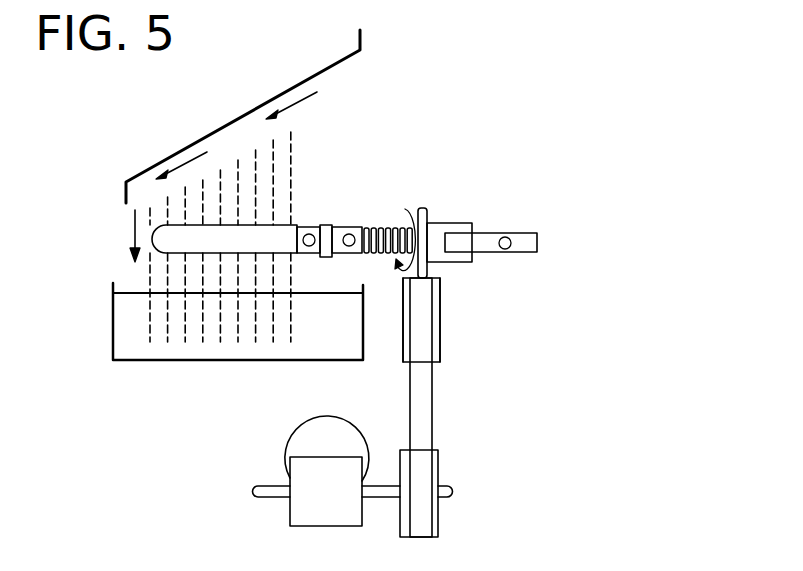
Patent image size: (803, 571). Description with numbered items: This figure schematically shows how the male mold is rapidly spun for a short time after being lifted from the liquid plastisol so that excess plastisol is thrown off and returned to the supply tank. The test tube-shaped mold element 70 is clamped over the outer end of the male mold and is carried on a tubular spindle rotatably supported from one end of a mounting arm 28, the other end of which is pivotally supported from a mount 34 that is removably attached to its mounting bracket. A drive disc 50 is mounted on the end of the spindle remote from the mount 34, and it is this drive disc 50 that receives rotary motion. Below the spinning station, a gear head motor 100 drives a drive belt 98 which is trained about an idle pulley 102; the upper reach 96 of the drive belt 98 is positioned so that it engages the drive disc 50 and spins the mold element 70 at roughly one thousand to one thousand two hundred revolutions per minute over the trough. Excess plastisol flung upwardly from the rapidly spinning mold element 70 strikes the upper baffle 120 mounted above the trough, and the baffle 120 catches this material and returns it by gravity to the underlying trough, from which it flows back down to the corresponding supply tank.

The upper baffle 120 is at (160, 167).
The mold element 70 is at (280, 235).
The drive disc 50 is at (425, 208).
The mounting arm 28 is at (483, 223).
The mount 34 is at (527, 235).
The upper reach 96 is at (432, 274).
The idle pulley 102 is at (400, 355).
The drive belt 98 is at (427, 429).
The gear head motor 100 is at (295, 513).